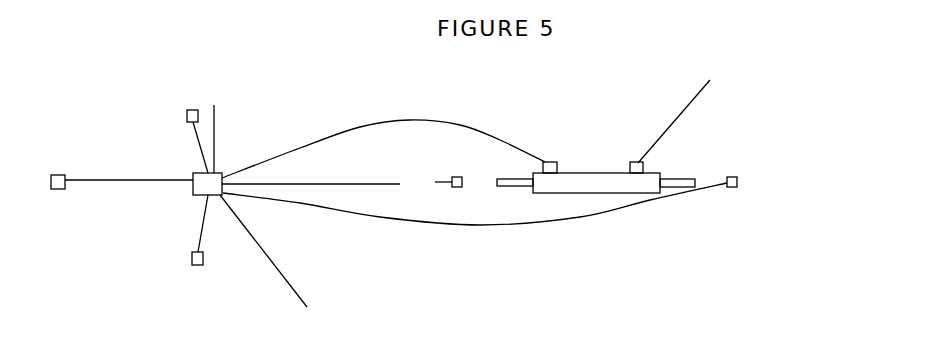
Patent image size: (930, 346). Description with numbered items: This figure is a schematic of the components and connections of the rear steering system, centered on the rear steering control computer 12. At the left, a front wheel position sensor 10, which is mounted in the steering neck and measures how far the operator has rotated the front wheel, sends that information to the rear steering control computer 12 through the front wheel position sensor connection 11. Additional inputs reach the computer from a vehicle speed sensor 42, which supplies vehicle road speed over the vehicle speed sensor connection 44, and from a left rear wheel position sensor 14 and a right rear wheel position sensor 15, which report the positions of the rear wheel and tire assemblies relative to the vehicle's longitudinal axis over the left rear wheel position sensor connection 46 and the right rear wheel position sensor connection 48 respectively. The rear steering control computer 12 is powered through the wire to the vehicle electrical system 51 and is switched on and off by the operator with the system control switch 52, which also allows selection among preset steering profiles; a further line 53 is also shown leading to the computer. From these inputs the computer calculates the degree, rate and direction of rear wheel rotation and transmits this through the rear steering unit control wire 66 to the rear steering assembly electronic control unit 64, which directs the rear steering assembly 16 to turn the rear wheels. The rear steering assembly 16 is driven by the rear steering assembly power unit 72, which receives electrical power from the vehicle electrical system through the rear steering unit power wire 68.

The front wheel position sensor 10 is at (61, 175).
The front wheel position sensor connection 11 is at (123, 170).
The rear steering control computer 12 is at (212, 183).
The left rear wheel position sensor 14 is at (453, 177).
The right rear wheel position sensor 15 is at (737, 177).
The rear steering assembly 16 is at (590, 182).
The vehicle speed sensor 42 is at (200, 265).
The vehicle speed sensor connection 44 is at (207, 223).
The left rear wheel position sensor connection 46 is at (397, 180).
The right rear wheel position sensor connection 48 is at (508, 227).
The wire to the vehicle electrical system 51 is at (288, 277).
The system control switch 52 is at (193, 110).
The vertical line 53 is at (215, 132).
The rear steering assembly electronic control unit 64 is at (553, 162).
The rear steering unit control wire 66 is at (407, 117).
The rear steering unit power wire 68 is at (680, 120).
The rear steering assembly power unit 72 is at (637, 163).